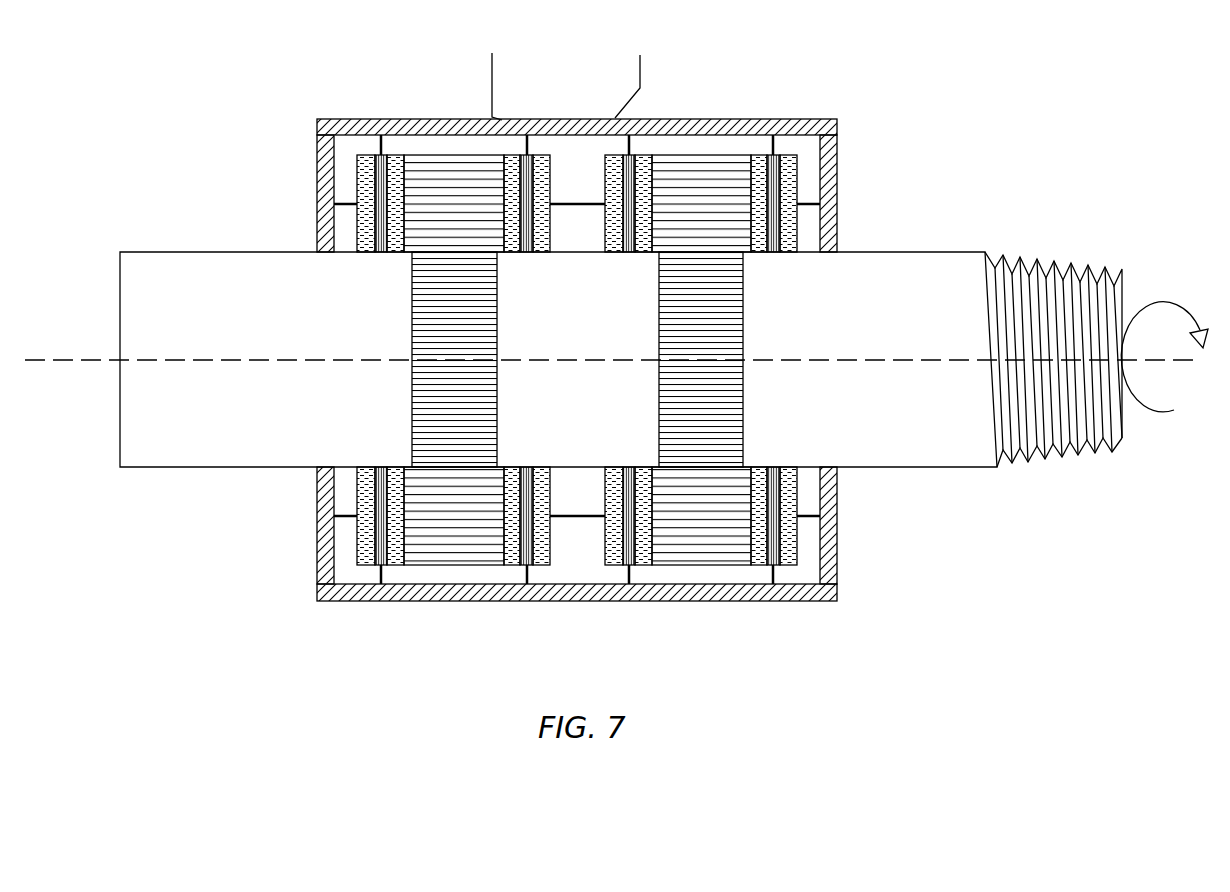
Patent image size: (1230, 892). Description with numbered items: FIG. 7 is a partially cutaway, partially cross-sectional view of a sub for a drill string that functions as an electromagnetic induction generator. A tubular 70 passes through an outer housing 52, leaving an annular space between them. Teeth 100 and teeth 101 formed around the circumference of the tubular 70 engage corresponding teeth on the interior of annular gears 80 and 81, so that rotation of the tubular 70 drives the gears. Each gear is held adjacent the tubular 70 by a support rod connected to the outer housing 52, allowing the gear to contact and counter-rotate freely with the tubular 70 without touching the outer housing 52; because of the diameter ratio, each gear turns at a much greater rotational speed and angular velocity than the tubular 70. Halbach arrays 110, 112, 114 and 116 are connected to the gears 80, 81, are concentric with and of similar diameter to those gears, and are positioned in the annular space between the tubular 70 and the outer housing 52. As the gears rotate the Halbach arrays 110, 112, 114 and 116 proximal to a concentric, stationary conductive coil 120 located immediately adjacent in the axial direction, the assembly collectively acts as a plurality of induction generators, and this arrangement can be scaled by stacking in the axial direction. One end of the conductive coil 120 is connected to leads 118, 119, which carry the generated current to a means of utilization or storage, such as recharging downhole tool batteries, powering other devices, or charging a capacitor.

The outer housing 52 is at (352, 122).
The tubular 70 is at (930, 252).
The gear 80 is at (393, 370).
The gear 81 is at (760, 377).
The teeth 100 is at (442, 403).
The teeth 101 is at (698, 339).
The Halbach array 110 is at (382, 530).
The Halbach array 112 is at (531, 180).
The Halbach array 114 is at (647, 518).
The Halbach array 116 is at (795, 168).
The lead 118 is at (490, 70).
The lead 119 is at (640, 65).
The conductive coil 120 is at (345, 204).